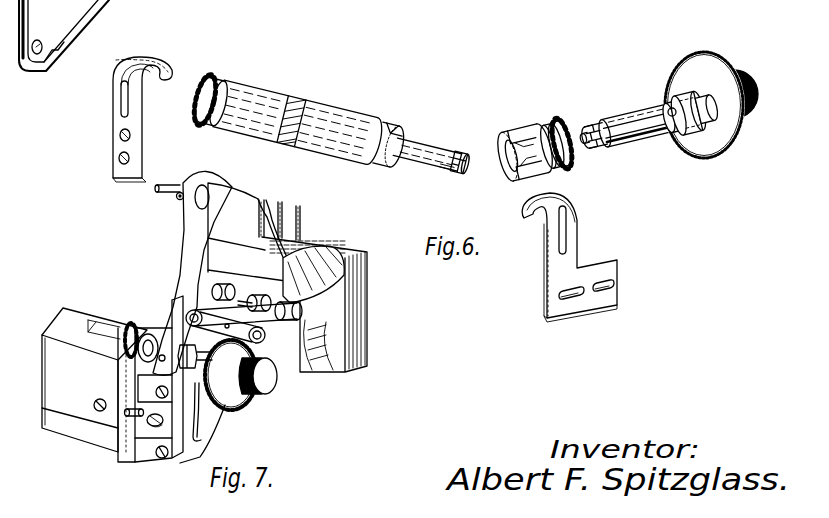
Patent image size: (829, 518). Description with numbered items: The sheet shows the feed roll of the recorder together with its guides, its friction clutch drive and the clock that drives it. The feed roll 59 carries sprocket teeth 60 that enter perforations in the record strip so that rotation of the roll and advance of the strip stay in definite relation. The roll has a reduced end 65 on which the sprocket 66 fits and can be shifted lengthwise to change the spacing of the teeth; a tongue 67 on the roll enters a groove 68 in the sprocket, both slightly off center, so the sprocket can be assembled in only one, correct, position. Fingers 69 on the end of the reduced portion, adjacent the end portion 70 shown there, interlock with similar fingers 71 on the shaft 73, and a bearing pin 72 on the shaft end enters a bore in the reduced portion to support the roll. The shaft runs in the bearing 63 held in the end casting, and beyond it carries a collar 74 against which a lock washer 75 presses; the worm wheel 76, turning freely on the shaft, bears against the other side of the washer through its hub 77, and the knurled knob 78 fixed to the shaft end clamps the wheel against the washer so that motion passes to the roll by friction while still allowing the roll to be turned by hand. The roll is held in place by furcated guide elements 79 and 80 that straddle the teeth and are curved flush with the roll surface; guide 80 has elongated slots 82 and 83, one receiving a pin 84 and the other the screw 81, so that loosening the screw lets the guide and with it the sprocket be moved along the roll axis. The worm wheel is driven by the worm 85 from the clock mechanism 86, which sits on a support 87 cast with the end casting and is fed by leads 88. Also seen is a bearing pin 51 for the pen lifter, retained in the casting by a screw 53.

In FIG. 7, the bearing pin 51 is at (160, 193).
In FIG. 7, the screw 53 is at (178, 200).
In FIG. 6, the feed roll 59 is at (337, 107).
In FIG. 6, the sprocket teeth 60 is at (226, 78).
In FIG. 6, the bearing 63 is at (632, 110).
In FIG. 6, the reduced end of the feed roll 65 is at (417, 143).
In FIG. 6, the sprocket 66 is at (542, 121).
In FIG. 6, the tongue 67 is at (375, 130).
In FIG. 6, the groove 68 is at (510, 142).
In FIG. 6, the fingers 69 is at (453, 175).
In FIG. 6, the shaft end 70 is at (437, 169).
In FIG. 6, the fingers 71 is at (603, 148).
In FIG. 6, the bearing pin 72 is at (590, 140).
In FIG. 6, the shaft 73 is at (673, 118).
In FIG. 6, the collar 74 is at (665, 100).
In FIG. 6, the lock washer 75 is at (681, 98).
In FIG. 6, the worm wheel 76 is at (690, 63).
In FIG. 6, the hub 77 is at (707, 120).
In FIG. 6, the knurled knob 78 is at (745, 74).
In FIG. 7, the knurled knob 78 is at (268, 392).
In FIG. 6, the guide element 79 is at (113, 125).
In FIG. 6, the guide element 80 is at (570, 269).
In FIG. 7, the guide element 80 is at (128, 398).
In FIG. 7, the screw 81 is at (154, 428).
In FIG. 6, the elongated slot 82 is at (571, 304).
In FIG. 6, the elongated slot 83 is at (604, 293).
In FIG. 7, the pin 84 is at (133, 418).
In FIG. 7, the worm 85 is at (217, 297).
In FIG. 7, the clock mechanism 86 is at (355, 325).
In FIG. 7, the support 87 is at (243, 208).
In FIG. 7, the leads 88 is at (300, 210).